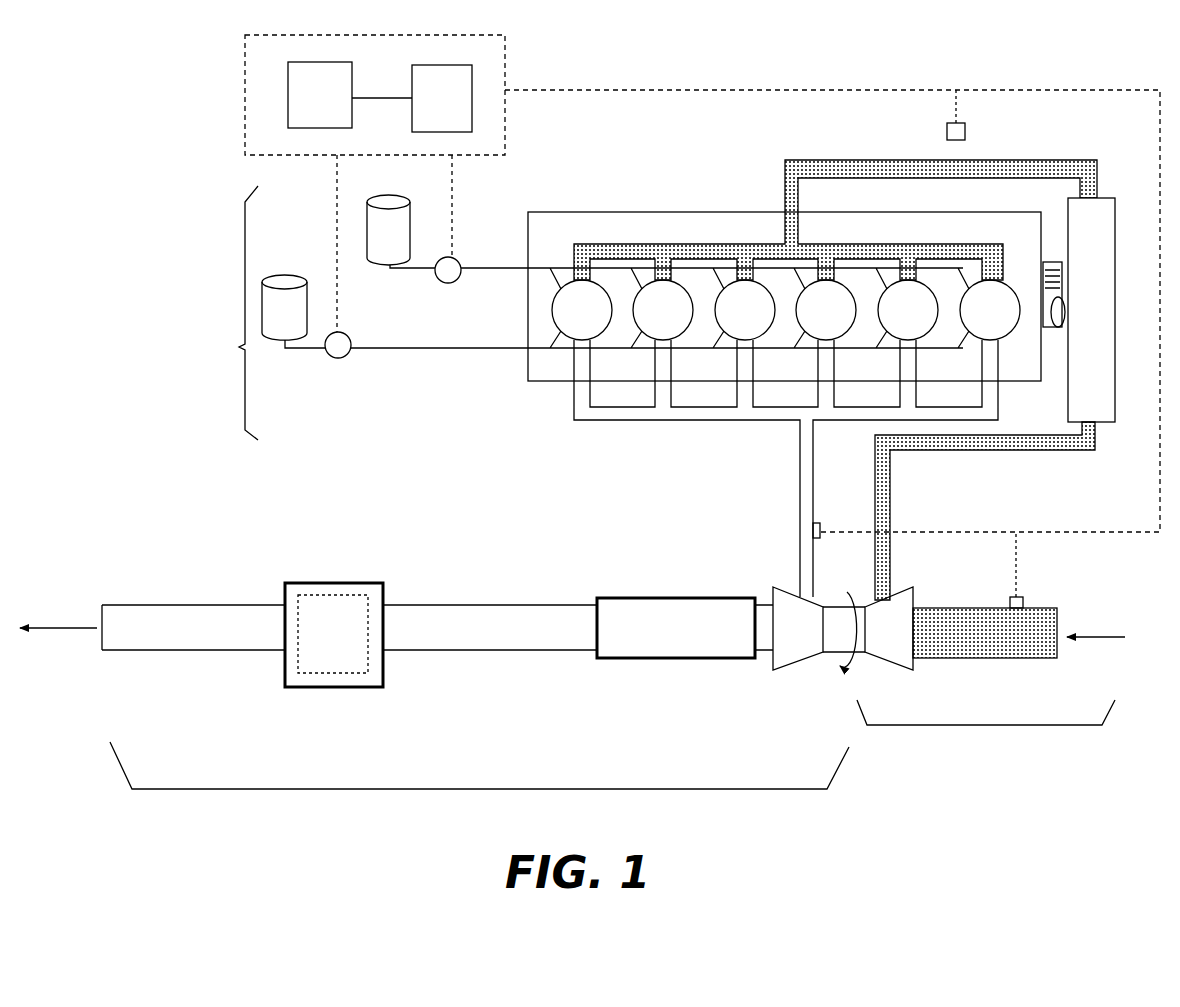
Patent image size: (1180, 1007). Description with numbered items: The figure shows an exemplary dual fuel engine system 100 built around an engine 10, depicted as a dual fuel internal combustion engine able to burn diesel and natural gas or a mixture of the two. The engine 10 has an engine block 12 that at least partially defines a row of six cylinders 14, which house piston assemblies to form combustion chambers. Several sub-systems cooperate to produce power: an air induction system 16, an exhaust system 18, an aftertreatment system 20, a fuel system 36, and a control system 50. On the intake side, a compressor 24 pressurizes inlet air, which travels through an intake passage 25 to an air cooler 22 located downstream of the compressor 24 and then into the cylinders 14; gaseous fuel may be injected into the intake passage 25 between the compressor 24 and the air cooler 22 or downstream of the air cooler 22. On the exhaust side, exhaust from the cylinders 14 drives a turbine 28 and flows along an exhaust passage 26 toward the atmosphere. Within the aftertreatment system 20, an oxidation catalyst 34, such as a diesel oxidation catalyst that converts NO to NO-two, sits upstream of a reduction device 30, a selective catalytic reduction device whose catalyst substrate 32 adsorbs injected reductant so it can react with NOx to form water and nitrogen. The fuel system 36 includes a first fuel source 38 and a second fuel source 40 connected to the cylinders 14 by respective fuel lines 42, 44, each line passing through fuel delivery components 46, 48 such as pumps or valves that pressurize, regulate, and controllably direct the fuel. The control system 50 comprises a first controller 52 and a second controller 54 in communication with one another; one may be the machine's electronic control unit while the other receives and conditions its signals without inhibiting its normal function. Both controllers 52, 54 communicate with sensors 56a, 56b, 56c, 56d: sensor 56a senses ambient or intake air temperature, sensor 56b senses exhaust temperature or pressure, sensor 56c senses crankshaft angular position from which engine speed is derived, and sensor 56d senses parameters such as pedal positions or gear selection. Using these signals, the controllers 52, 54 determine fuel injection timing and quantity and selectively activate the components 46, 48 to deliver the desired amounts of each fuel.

The dual fuel engine system 100 is at (113, 177).
The engine 10 is at (677, 203).
The engine block 12 is at (592, 212).
The cylinders 14 is at (786, 310).
The air induction system 16 is at (1007, 727).
The exhaust system 18 is at (365, 791).
The aftertreatment system 20 is at (142, 470).
The air cooler 22 is at (844, 291).
The compressor 24 is at (916, 603).
The intake passage 25 is at (890, 514).
The exhaust passage 26 is at (567, 605).
The turbine 28 is at (800, 452).
The reduction device 30 is at (333, 634).
The catalyst substrate 32 is at (355, 592).
The oxidation catalyst 34 is at (676, 628).
The fuel system 36 is at (243, 347).
The first fuel source 38 is at (293, 311).
The second fuel source 40 is at (401, 231).
The fuel line 42 is at (412, 352).
The fuel line 44 is at (498, 278).
The fuel delivery components 46 is at (334, 358).
The fuel delivery components 48 is at (438, 283).
The control system 50 is at (245, 143).
The first controller 52 is at (350, 95).
The second controller 54 is at (442, 98).
The sensor 56a is at (1023, 600).
The sensor 56b is at (820, 528).
The sensor 56c is at (1052, 262).
The sensor 56d is at (965, 130).